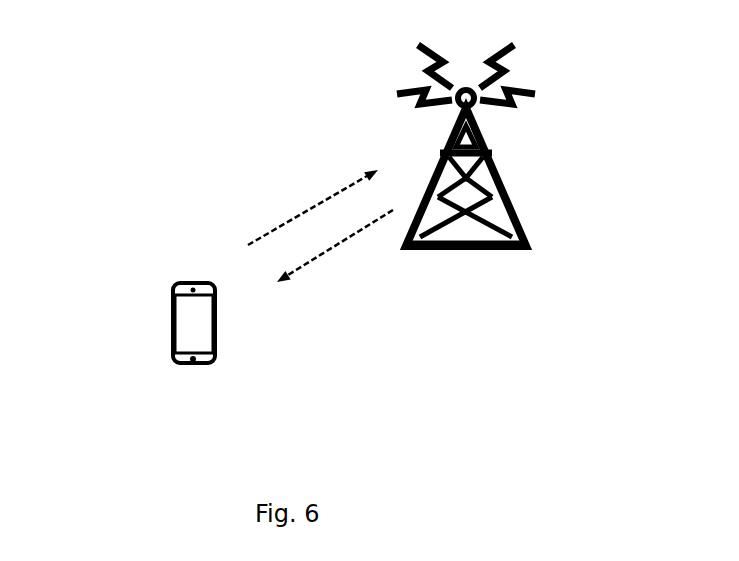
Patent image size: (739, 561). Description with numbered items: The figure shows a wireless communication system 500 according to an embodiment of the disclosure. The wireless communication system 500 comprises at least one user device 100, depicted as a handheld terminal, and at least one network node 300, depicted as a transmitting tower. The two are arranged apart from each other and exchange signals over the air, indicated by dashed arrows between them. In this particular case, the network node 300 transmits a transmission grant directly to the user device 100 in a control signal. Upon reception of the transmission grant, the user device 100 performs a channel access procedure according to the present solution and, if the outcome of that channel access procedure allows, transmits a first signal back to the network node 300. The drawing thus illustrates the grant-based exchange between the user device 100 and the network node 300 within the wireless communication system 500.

The wireless communication system 500 is at (125, 87).
The user device 100 is at (185, 367).
The network node 300 is at (480, 252).